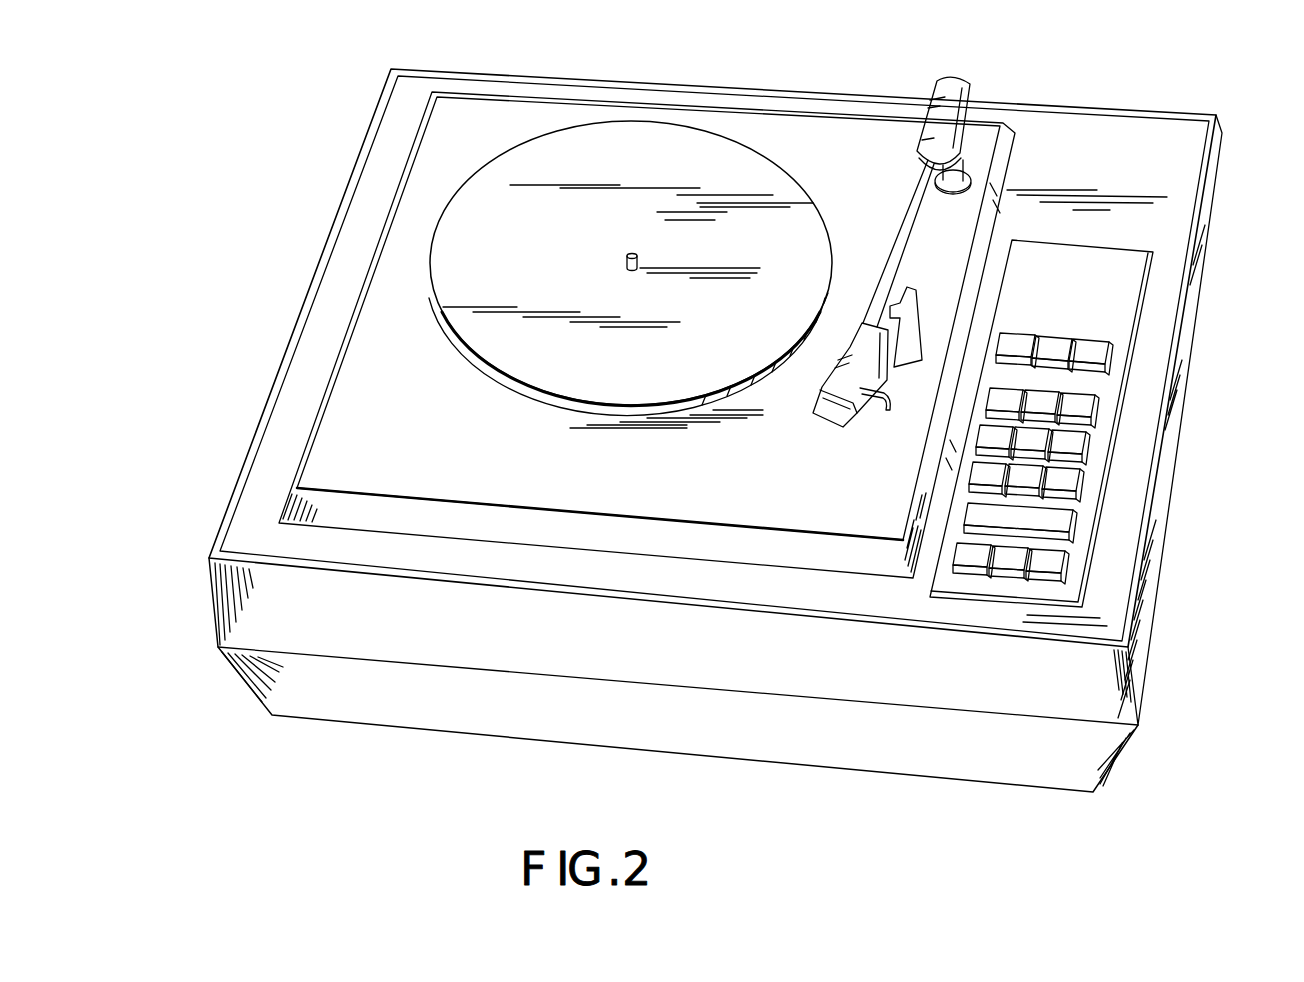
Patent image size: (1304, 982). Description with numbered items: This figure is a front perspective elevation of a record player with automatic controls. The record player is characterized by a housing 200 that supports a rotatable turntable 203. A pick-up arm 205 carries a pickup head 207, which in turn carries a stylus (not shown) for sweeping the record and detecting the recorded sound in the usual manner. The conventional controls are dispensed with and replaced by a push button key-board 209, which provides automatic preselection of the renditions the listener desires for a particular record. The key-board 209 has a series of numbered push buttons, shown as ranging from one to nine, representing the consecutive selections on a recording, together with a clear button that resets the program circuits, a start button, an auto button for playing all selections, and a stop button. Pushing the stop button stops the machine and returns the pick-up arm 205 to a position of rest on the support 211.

The housing 200 is at (1198, 350).
The turntable 203 is at (622, 152).
The pick-up arm 205 is at (940, 233).
The pickup head 207 is at (835, 410).
The push button key-board 209 is at (1091, 481).
The support 211 is at (918, 303).